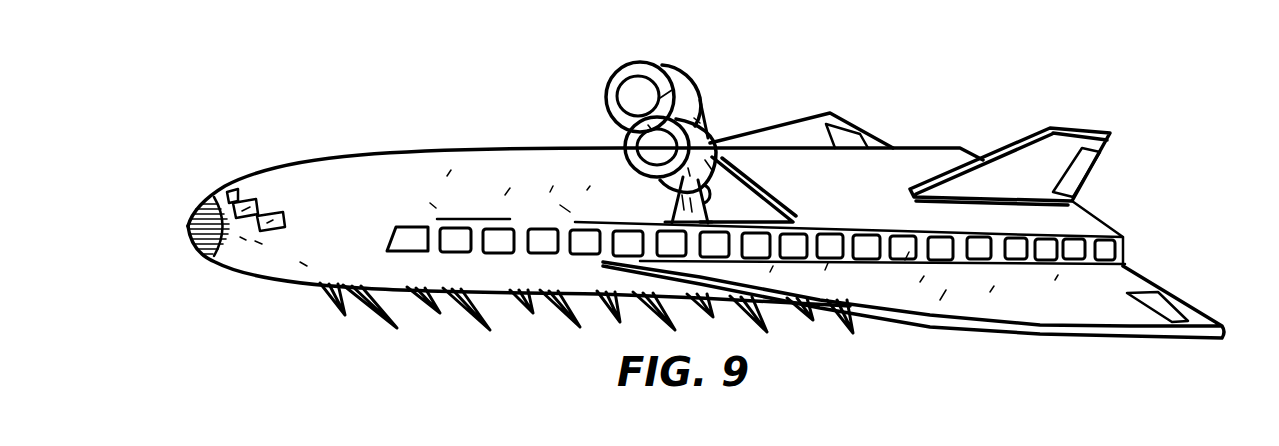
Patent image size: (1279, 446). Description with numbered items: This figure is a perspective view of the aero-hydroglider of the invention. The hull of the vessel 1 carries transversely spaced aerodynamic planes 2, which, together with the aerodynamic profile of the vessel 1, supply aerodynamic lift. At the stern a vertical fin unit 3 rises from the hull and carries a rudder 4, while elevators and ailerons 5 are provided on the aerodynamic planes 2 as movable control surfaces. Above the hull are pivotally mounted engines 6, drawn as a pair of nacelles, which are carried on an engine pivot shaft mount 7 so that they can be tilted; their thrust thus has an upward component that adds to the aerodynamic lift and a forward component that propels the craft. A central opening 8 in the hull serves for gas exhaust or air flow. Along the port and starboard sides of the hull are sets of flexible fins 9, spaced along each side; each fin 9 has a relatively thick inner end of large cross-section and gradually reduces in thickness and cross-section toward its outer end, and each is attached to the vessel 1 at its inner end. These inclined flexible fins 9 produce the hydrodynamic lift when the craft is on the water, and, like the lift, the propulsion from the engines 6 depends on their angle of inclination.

The vessel 1 is at (277, 263).
The aerodynamic planes 2 is at (790, 135).
The vertical fin unit 3 is at (1034, 156).
The rudder 4 is at (1084, 168).
The elevators and ailerons 5 is at (857, 134).
The pivotally mounted engines 6 is at (686, 93).
The engine pivot shaft mount 7 is at (671, 207).
The central opening 8 is at (768, 204).
The flexible fins 9 is at (348, 316).